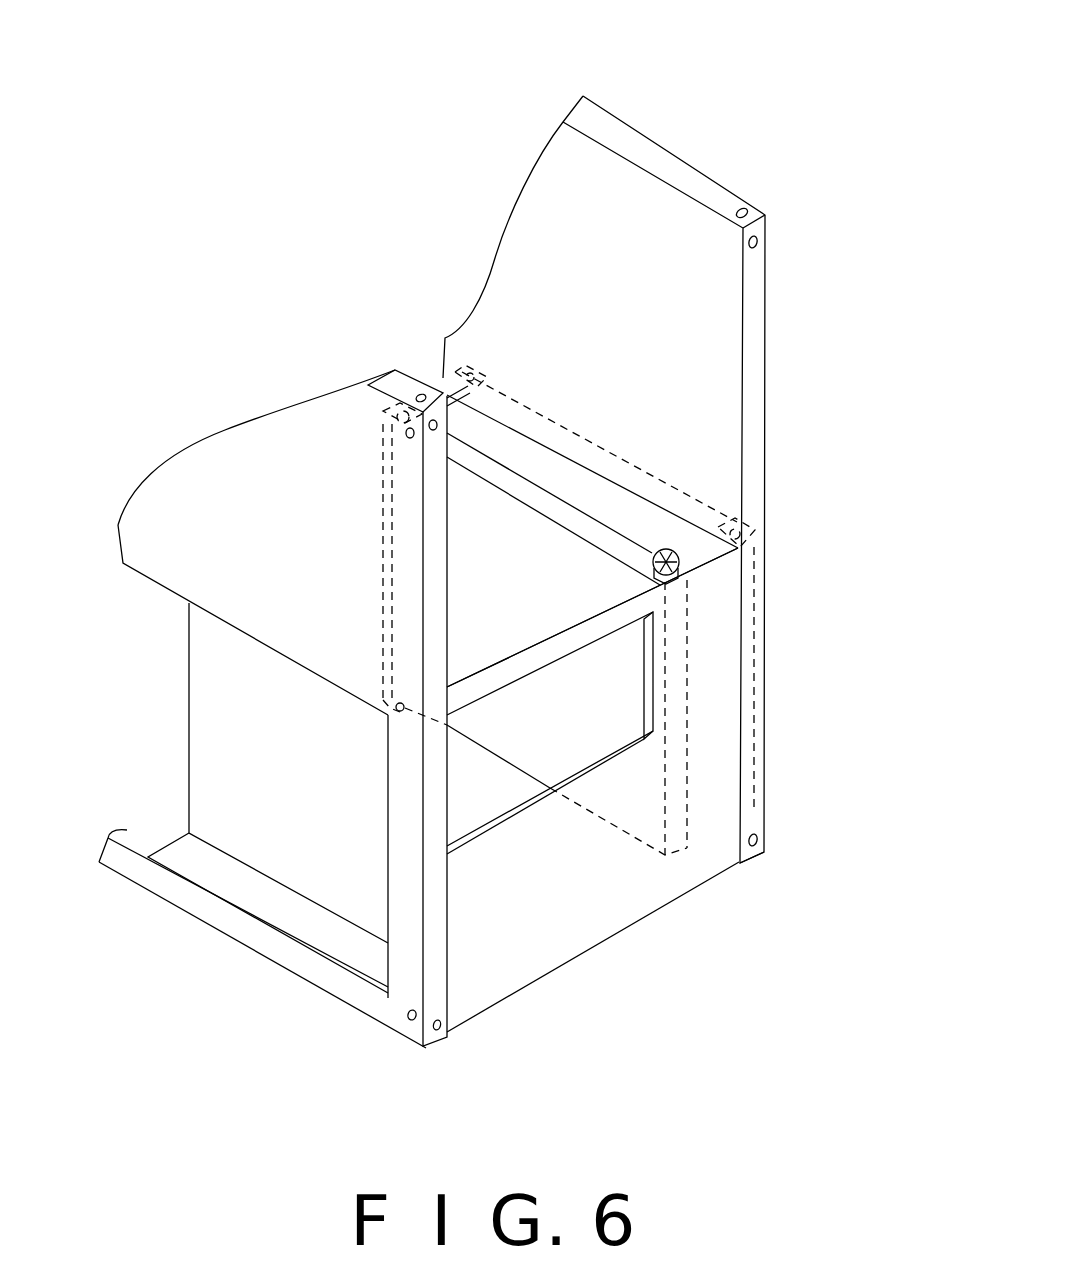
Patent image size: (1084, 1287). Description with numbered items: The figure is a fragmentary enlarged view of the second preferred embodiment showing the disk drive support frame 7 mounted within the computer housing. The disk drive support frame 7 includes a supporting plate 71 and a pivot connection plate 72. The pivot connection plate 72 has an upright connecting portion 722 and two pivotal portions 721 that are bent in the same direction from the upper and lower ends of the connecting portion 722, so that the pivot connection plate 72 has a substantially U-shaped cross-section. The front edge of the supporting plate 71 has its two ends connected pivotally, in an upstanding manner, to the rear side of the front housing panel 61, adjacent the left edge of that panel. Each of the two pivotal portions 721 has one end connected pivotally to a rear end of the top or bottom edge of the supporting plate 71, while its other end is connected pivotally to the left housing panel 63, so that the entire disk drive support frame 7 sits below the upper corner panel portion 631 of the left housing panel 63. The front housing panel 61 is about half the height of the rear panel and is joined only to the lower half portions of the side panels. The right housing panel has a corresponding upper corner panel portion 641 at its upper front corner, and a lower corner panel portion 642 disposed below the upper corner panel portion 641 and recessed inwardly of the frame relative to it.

The disk drive support frame 7 is at (553, 708).
The supporting plate 71 is at (527, 623).
The pivot connection plate 72 is at (480, 610).
The pivotal portions 721 is at (377, 545).
The connecting portion 722 is at (383, 603).
The front housing panel 61 is at (713, 632).
The left housing panel 63 is at (689, 431).
The upper corner panel portion 631 is at (590, 203).
The upper corner panel portion 641 is at (177, 568).
The lower corner panel portion 642 is at (303, 862).